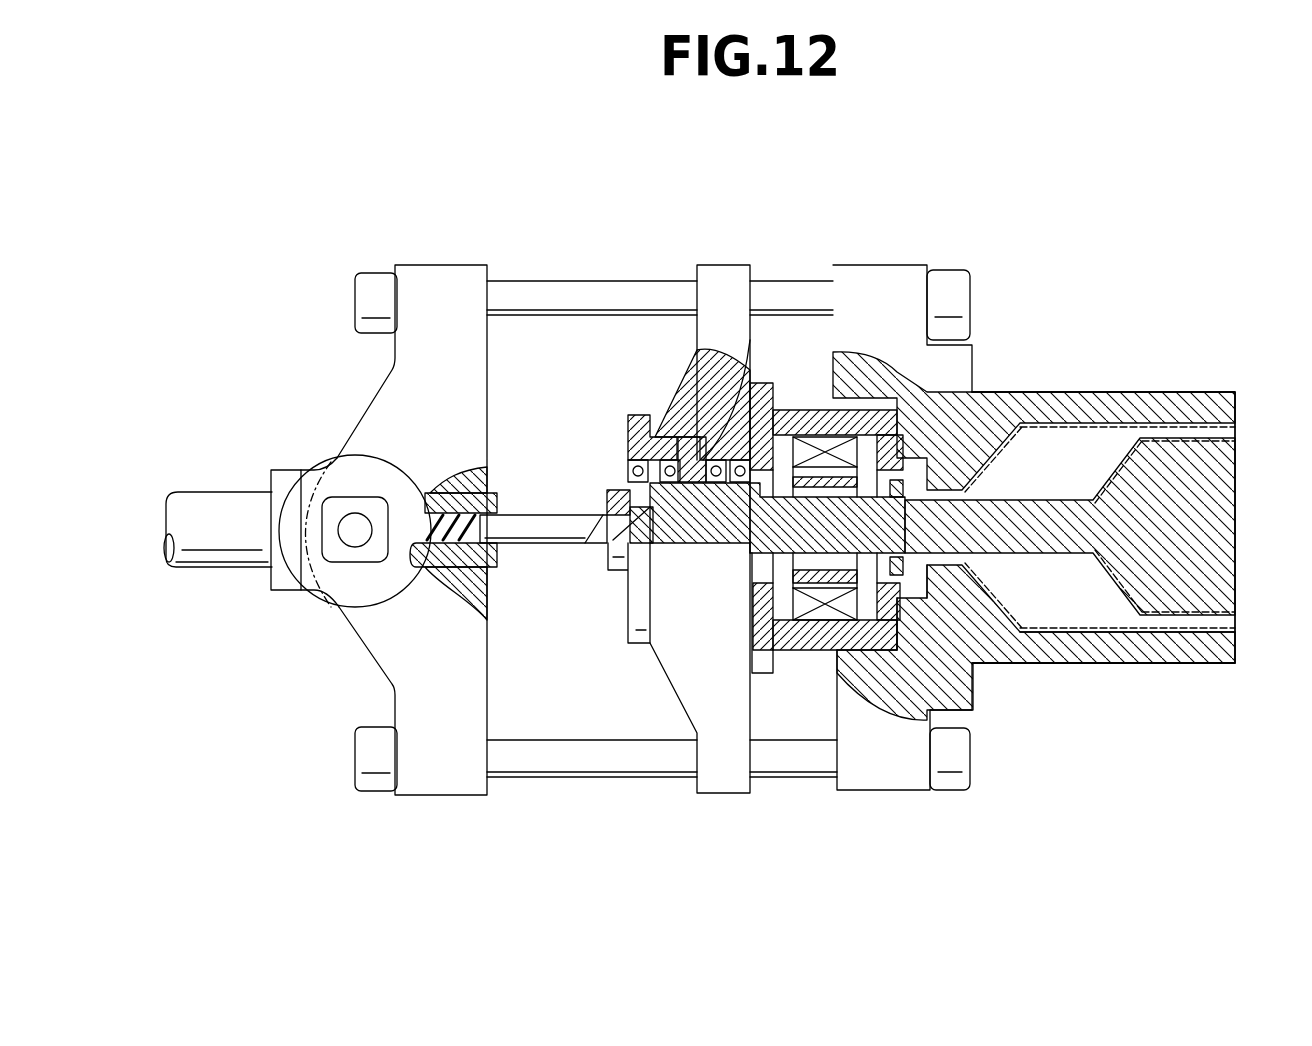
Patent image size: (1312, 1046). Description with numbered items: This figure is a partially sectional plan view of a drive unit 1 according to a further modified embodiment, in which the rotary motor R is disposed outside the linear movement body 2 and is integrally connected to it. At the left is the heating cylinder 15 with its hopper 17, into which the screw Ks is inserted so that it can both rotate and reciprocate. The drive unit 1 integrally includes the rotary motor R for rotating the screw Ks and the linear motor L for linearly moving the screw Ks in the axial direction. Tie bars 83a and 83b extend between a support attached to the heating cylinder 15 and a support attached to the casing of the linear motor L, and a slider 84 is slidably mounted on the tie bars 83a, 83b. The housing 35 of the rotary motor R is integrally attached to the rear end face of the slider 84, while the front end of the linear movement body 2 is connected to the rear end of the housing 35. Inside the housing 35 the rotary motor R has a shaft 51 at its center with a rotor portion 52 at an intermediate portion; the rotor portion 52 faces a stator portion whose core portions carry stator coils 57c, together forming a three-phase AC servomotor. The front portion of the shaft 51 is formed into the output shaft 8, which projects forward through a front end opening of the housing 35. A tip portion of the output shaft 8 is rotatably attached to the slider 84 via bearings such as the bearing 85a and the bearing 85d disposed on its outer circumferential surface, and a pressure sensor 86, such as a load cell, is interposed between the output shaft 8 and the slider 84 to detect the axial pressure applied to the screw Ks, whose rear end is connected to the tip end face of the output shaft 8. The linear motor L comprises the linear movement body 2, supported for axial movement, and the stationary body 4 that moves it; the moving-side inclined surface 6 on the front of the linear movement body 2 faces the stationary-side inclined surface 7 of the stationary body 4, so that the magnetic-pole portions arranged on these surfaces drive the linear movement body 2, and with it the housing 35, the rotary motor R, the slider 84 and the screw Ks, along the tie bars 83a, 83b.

The heating cylinder 15 is at (210, 490).
The hopper 17 is at (329, 610).
The tie bar 83a is at (588, 281).
The tie bar 83b is at (565, 780).
The screw Ks is at (528, 513).
The bearing 85a is at (632, 418).
The slider 84 is at (720, 265).
The pressure sensor 86 is at (655, 437).
The bearing 85d is at (773, 430).
The output shaft 8 is at (875, 430).
The stator coil 57c is at (975, 355).
The drive unit 1 is at (1062, 345).
The stationary-side inclined surface 7 is at (1003, 427).
The moving-side inclined surface 6 is at (1113, 457).
The linear motor L is at (1210, 382).
The linear movement body 2 is at (1237, 550).
The stationary body 4 is at (1165, 665).
The rotor portion 52 is at (975, 690).
The housing 35 is at (848, 565).
The rotary motor R is at (810, 655).
The shaft 51 is at (725, 793).